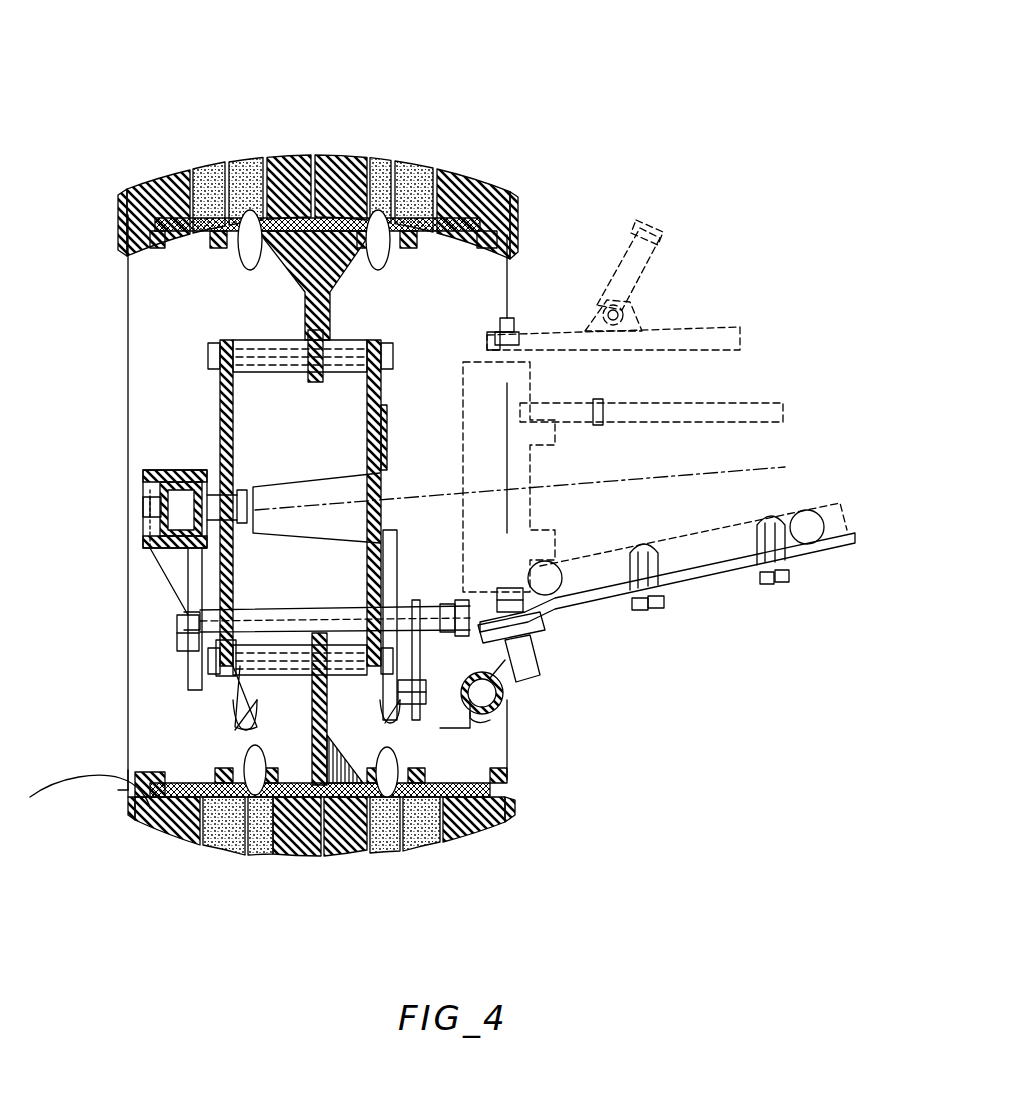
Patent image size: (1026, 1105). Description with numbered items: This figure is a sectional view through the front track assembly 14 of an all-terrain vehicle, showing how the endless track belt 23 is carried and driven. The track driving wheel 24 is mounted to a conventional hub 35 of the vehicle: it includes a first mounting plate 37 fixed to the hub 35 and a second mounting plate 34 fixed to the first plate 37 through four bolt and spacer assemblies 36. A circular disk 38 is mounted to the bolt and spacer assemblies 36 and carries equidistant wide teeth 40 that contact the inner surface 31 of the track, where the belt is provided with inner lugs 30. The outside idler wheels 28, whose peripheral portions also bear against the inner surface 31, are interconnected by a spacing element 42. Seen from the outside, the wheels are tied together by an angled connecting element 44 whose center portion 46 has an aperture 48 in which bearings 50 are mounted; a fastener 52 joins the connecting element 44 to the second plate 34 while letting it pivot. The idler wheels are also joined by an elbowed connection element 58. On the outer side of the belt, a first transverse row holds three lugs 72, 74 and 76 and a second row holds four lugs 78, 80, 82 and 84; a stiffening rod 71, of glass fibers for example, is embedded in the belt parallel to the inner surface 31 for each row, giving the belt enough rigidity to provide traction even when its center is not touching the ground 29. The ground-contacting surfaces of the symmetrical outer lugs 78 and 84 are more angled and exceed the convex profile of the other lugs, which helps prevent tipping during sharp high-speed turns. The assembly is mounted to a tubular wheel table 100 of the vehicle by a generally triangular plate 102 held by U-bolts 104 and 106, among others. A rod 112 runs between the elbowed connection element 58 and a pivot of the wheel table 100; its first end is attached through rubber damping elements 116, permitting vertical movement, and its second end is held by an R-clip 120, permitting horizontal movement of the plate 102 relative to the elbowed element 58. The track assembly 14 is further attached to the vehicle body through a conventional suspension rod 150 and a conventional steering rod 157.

The front track assembly 14 is at (170, 104).
The endless track belt 23 is at (331, 158).
The track driving wheel 24 is at (230, 316).
The outside idler wheels 28 is at (233, 718).
The ground 29 is at (367, 838).
The inner lugs 30 is at (390, 152).
The inner surface 31 is at (520, 780).
The second mounting plate 34 is at (317, 535).
The hub 35 is at (445, 368).
The bolt and spacer assemblies 36 is at (372, 672).
The first mounting plate 37 is at (398, 332).
The circular disk 38 is at (312, 692).
The wide teeth 40 is at (330, 715).
The spacing element 42 is at (306, 632).
The angled connecting element 44 is at (135, 465).
The center portion 46 is at (142, 474).
The aperture 48 is at (155, 495).
The bearings 50 is at (150, 522).
The fastener 52 is at (242, 488).
The elbowed connection element 58 is at (440, 730).
The stiffening rod 71 is at (185, 782).
The lug 72 is at (160, 830).
The lug 74 is at (340, 850).
The lug 76 is at (455, 845).
The lug 78 is at (130, 798).
The lug 80 is at (230, 840).
The lug 82 is at (420, 850).
The lug 84 is at (494, 820).
The tubular wheel table 100 is at (686, 528).
The triangular plate 102 is at (812, 560).
The U-bolt 104 is at (752, 590).
The U-bolt 106 is at (626, 600).
The rod 112 is at (505, 695).
The rubber damping elements 116 is at (488, 722).
The R-clip 120 is at (545, 638).
The rod 150 is at (745, 320).
The rod 157 is at (778, 400).